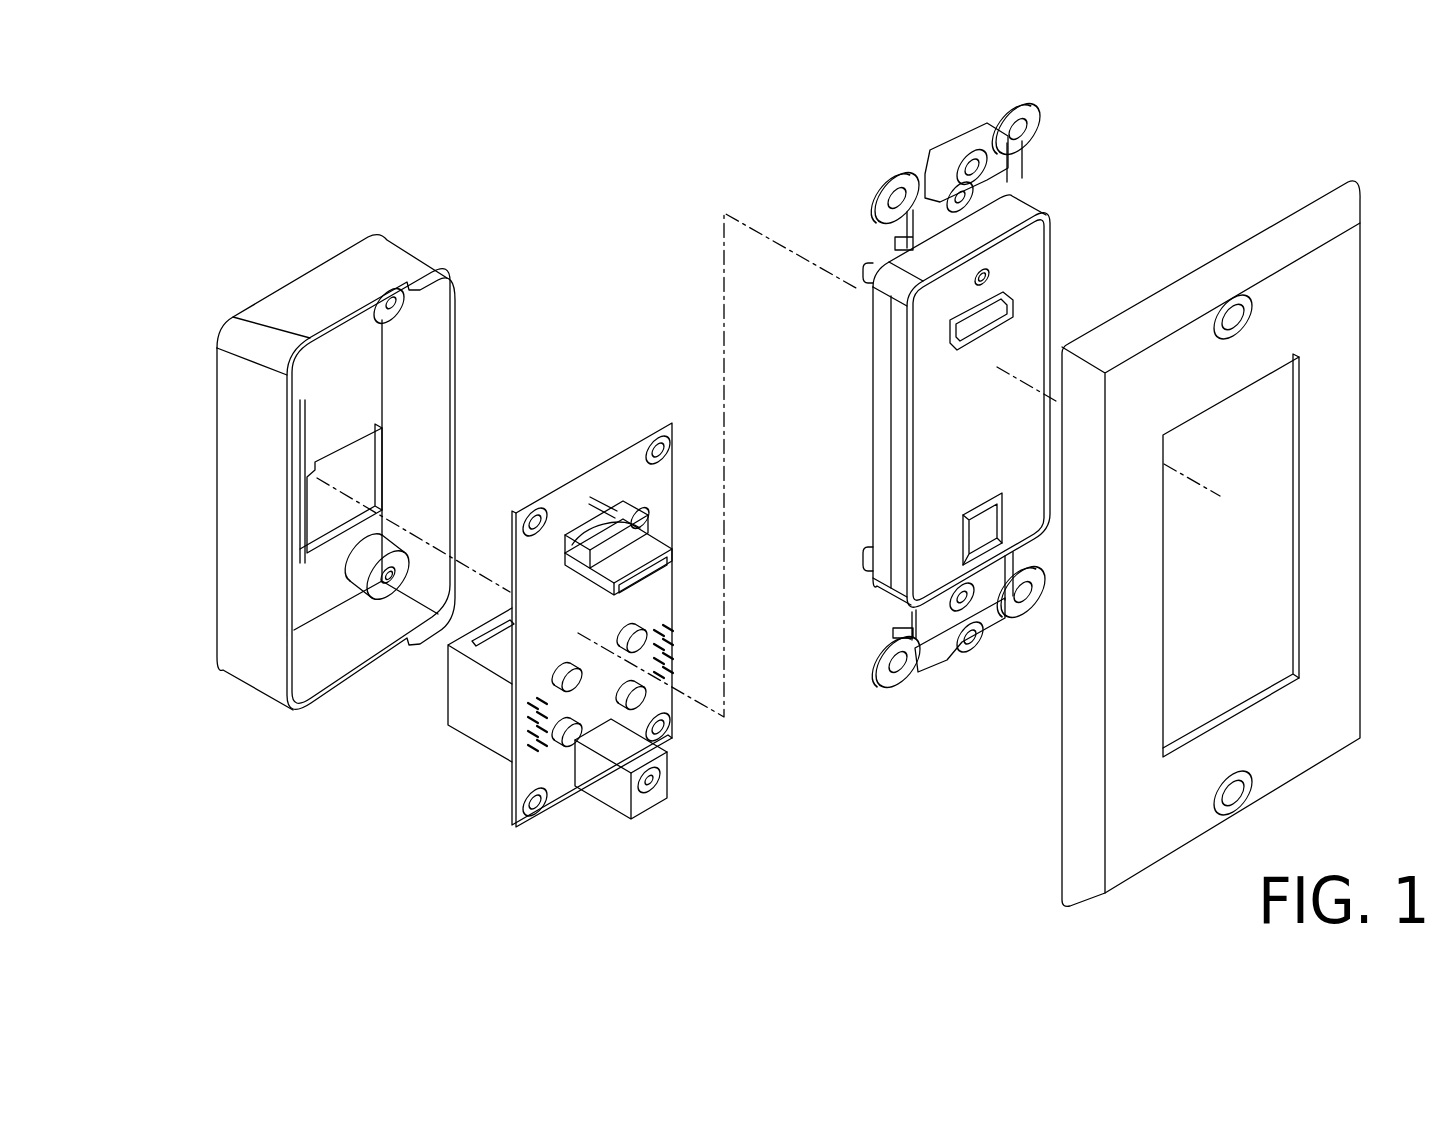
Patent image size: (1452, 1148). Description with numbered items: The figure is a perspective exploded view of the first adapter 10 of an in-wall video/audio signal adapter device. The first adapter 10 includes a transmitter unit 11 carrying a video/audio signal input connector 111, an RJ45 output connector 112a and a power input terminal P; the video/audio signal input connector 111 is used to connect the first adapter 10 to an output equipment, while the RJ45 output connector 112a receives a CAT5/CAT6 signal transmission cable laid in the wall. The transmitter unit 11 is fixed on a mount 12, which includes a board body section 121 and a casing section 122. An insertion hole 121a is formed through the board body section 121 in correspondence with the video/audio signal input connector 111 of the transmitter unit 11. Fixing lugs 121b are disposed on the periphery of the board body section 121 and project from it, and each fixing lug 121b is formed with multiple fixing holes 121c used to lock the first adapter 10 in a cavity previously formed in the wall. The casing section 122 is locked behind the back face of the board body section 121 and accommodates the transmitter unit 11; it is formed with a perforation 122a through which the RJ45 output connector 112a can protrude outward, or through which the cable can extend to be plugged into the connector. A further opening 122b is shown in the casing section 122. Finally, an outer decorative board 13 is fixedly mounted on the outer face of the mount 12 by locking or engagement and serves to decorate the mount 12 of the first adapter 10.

The first adapter 10 is at (1182, 897).
The transmitter unit 11 is at (612, 458).
The video/audio signal input connector 111 is at (603, 533).
The RJ45 output connector 112a is at (447, 700).
The mount 12 is at (805, 100).
The board body section 121 is at (875, 190).
The insertion hole 121a is at (1040, 284).
The fixing lug 121b is at (960, 760).
The fixing hole 121c is at (908, 115).
The casing section 122 is at (387, 245).
The perforation 122a is at (282, 545).
The opening in rear cover 122b is at (348, 460).
The outer decorative board 13 is at (1312, 382).
The power input terminal P is at (718, 830).